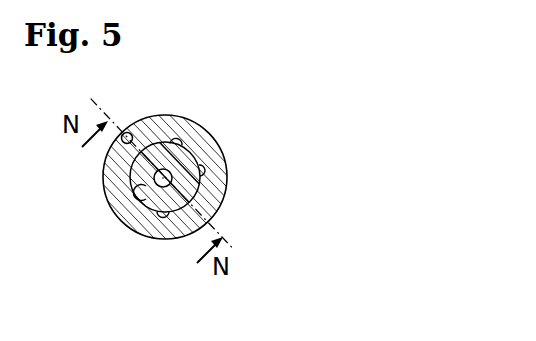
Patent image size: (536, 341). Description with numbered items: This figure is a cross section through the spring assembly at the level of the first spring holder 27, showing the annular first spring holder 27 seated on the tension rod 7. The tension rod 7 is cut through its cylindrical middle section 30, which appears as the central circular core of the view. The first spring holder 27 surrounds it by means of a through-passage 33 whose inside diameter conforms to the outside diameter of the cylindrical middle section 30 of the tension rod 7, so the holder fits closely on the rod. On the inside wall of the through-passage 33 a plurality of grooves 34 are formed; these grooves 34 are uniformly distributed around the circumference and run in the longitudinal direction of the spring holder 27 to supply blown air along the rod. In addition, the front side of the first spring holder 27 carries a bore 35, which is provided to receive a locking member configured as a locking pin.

The tension rod 7 is at (200, 154).
The first spring holder 27 is at (210, 185).
The cylindrical middle section 30 is at (165, 160).
The through-passage 33 is at (139, 191).
The grooves 34 is at (165, 213).
The bore 35 is at (126, 132).